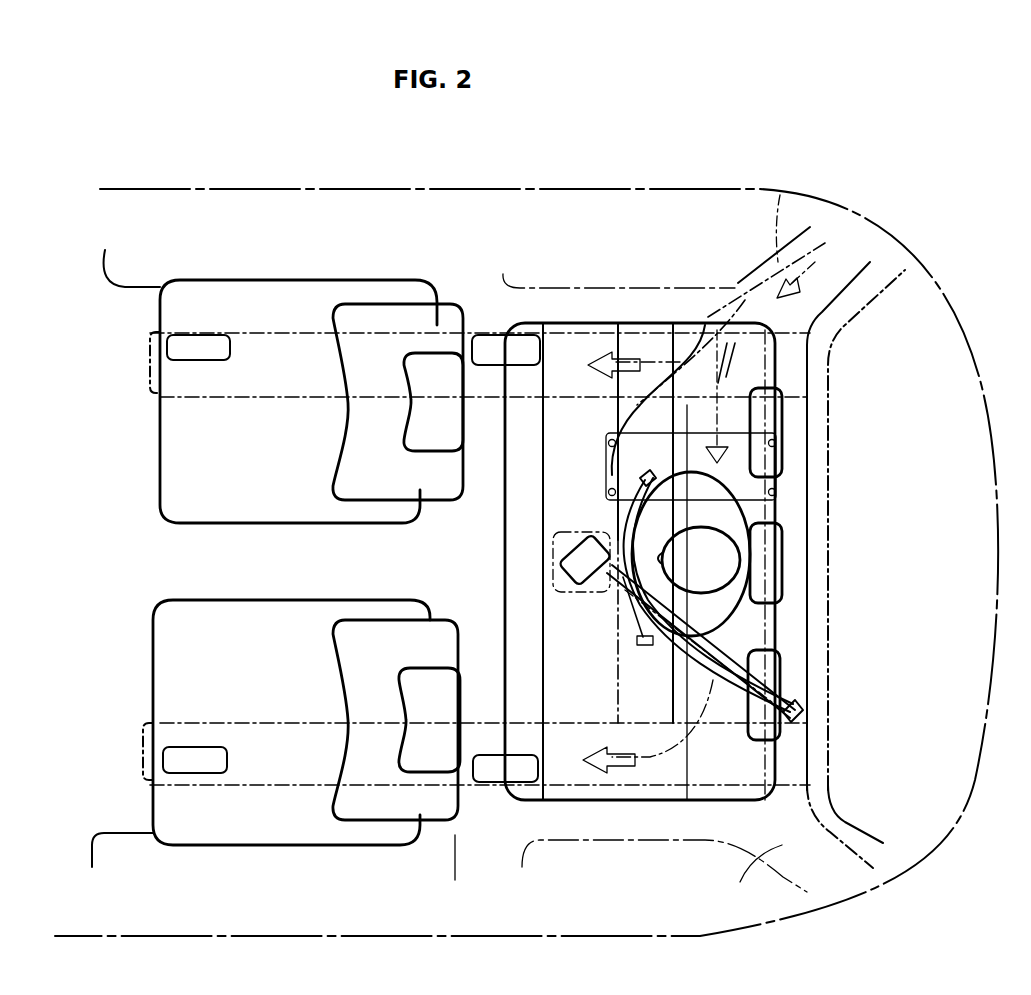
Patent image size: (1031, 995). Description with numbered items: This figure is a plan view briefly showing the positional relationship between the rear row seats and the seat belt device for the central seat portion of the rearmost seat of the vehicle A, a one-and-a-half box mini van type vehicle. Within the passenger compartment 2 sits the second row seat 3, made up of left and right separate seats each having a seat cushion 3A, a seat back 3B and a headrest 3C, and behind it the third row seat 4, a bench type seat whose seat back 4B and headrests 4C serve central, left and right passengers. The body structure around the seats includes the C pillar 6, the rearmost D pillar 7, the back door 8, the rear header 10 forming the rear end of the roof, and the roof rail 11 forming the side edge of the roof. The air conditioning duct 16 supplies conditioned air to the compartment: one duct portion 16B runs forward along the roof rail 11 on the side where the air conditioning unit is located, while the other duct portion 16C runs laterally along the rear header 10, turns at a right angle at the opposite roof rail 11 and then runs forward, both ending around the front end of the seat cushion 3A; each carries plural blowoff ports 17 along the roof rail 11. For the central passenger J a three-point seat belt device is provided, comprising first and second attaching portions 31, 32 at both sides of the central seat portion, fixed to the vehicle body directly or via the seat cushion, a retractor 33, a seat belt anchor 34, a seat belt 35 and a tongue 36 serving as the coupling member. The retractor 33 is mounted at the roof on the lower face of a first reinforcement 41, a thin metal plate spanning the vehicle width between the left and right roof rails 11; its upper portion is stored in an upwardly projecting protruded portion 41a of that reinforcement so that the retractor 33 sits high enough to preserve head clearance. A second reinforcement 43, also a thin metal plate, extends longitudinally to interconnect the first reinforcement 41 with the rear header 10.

The passenger compartment 2 is at (292, 571).
The second row seat 3 is at (168, 652).
The seat cushion 3A is at (175, 430).
The seat back 3B is at (362, 414).
The headrest 3C is at (425, 430).
The third row seat 4 is at (516, 534).
The seat back 4B is at (758, 783).
The headrests 4C is at (760, 405).
The C pillar 6 is at (512, 268).
The D pillar 7 is at (760, 539).
The back door 8 is at (935, 357).
The rear header 10 is at (793, 690).
The roof rail 11 is at (623, 307).
The air conditioning duct 16 is at (847, 290).
The duct portion 16B is at (263, 335).
The duct portion 16C is at (282, 785).
The blowoff ports 17 is at (190, 345).
The first attaching portion 31 is at (646, 645).
The second attaching portion 32 is at (645, 475).
The retractor 33 is at (578, 560).
The seat belt anchor 34 is at (803, 720).
The seat belt 35 is at (626, 535).
The tongue 36 is at (640, 478).
The first reinforcement 41 is at (550, 622).
The protruded portion 41a is at (556, 531).
The second reinforcement 43 is at (705, 325).
The vehicle A is at (378, 188).
The central passenger J is at (710, 518).